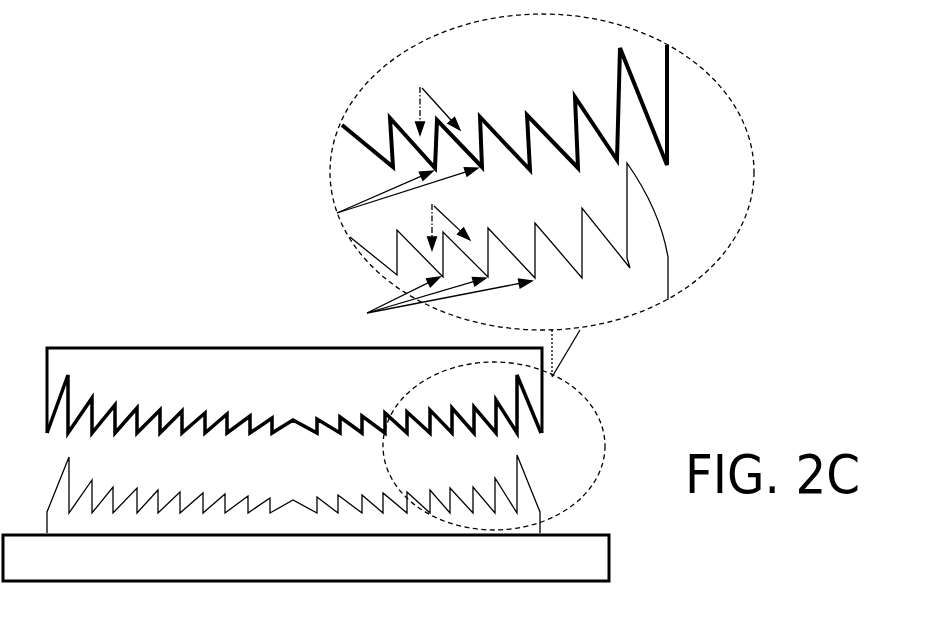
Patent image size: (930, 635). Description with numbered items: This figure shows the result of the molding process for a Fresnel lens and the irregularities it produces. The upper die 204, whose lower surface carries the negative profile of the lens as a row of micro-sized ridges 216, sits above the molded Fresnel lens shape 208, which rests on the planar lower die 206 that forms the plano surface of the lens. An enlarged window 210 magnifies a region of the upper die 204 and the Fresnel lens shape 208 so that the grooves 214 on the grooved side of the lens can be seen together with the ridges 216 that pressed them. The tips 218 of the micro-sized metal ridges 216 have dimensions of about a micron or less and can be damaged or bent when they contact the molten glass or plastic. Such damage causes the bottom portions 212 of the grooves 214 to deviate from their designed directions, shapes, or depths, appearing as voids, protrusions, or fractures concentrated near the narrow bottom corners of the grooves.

The upper die 204 is at (667, 72).
The lower die 206 is at (610, 567).
The Fresnel lens shape 208 is at (668, 275).
The enlarged window 210 is at (755, 170).
The bottom portions of the grooves 212 is at (367, 313).
The grooves 214 is at (432, 204).
The micro-sized ridges 216 is at (420, 87).
The tips of the micro-sized ridges 218 is at (337, 213).